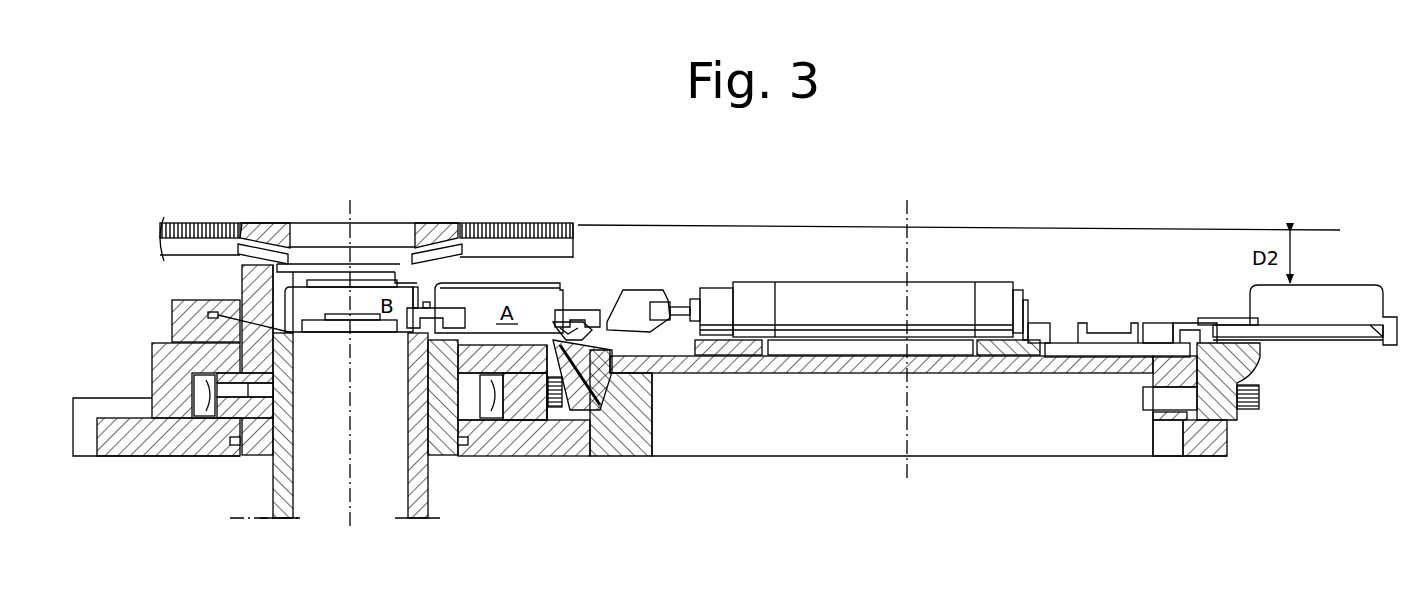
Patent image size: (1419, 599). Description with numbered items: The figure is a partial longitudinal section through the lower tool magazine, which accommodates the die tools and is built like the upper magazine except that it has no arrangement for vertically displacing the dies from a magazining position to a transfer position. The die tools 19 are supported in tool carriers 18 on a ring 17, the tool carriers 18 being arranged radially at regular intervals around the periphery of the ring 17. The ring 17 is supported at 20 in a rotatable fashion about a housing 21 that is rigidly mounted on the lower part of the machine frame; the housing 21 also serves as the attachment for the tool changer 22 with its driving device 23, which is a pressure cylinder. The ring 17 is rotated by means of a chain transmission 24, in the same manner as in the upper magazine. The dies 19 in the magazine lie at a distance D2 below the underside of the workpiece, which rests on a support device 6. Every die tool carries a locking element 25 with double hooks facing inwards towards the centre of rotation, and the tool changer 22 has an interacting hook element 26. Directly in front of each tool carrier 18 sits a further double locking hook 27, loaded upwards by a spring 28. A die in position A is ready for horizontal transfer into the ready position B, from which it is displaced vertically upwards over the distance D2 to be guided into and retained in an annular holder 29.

The support device 6 is at (582, 231).
The annular holder 29 is at (430, 222).
The tool changer 22 is at (867, 273).
The driving device 23 is at (857, 315).
The locking element 25 is at (567, 312).
The double locking hook 27 is at (602, 318).
The hook element 26 is at (638, 302).
The spring 28 is at (612, 372).
The housing 21 is at (974, 422).
The die tool 19 is at (1341, 297).
The tool carrier 18 is at (1347, 338).
The ring 17 is at (1252, 352).
The chain transmission 24 is at (1260, 400).
The rotatable support 20 is at (1233, 420).